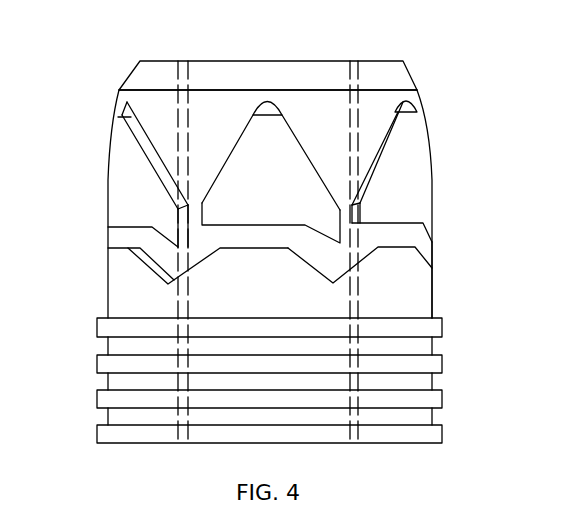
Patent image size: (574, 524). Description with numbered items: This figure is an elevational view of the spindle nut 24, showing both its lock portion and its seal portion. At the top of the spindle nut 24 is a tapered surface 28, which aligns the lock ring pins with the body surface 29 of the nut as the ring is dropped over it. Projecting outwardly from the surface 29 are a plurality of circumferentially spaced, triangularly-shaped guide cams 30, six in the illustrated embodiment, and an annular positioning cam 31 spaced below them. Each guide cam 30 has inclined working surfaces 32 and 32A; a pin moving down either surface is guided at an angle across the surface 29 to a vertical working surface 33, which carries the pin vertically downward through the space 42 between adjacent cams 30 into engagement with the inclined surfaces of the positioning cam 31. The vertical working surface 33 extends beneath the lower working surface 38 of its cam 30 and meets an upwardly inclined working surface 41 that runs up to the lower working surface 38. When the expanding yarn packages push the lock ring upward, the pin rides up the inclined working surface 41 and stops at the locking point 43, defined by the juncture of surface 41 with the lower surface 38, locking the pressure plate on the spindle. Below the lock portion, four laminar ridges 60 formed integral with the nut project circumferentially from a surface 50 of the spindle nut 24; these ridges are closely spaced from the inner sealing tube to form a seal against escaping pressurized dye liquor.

The spindle nut 24 is at (431, 168).
The tapered surface 28 is at (387, 68).
The surface 29 is at (215, 102).
The guide cams 30 is at (120, 148).
The positioning cam 31 is at (413, 278).
The working surface 32 is at (148, 132).
The working surface 32A is at (224, 176).
The vertical working surface 33 is at (177, 227).
The lower working surface 38 is at (250, 225).
The working surface 41 is at (302, 245).
The space 42 is at (198, 203).
The locking point 43 is at (290, 243).
The surface 50 is at (423, 347).
The laminar ridges 60 is at (432, 400).